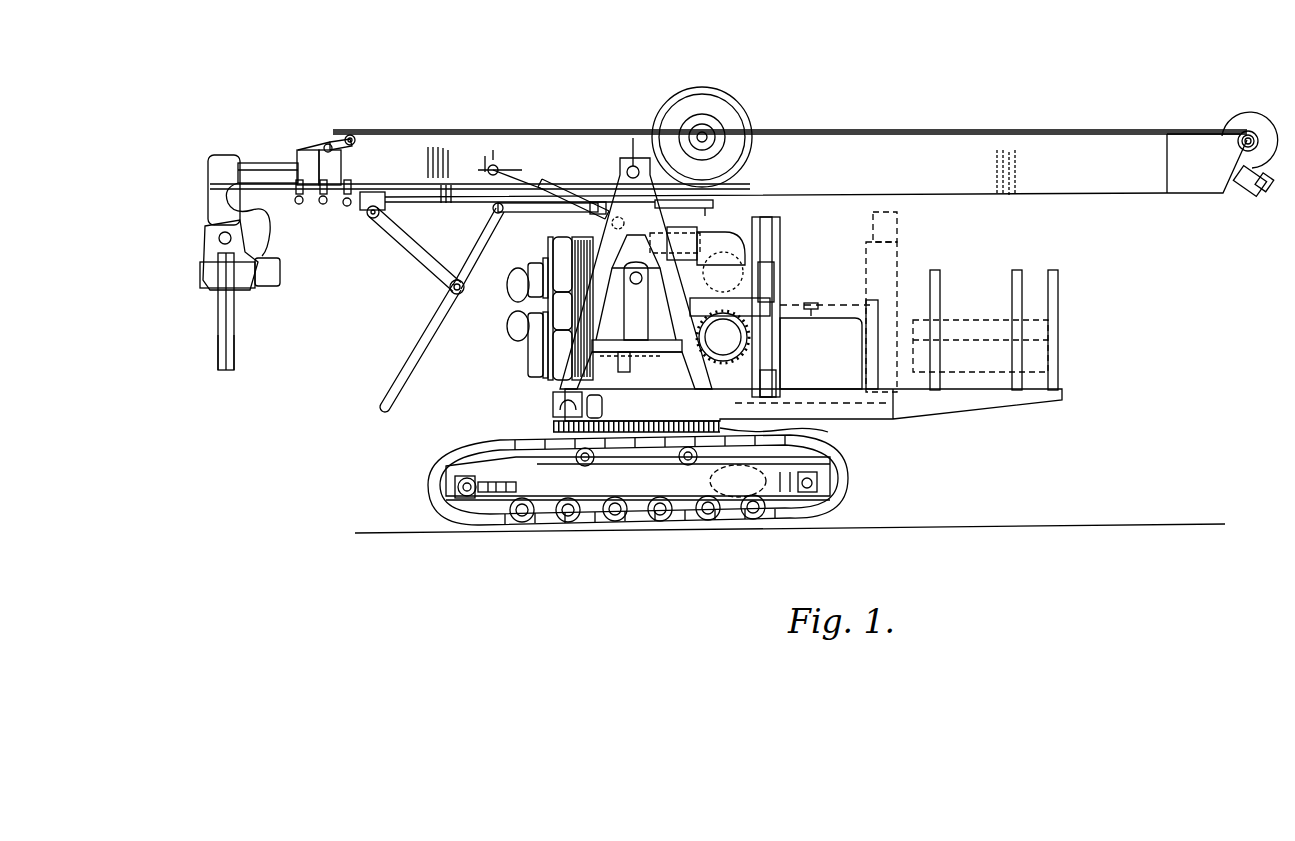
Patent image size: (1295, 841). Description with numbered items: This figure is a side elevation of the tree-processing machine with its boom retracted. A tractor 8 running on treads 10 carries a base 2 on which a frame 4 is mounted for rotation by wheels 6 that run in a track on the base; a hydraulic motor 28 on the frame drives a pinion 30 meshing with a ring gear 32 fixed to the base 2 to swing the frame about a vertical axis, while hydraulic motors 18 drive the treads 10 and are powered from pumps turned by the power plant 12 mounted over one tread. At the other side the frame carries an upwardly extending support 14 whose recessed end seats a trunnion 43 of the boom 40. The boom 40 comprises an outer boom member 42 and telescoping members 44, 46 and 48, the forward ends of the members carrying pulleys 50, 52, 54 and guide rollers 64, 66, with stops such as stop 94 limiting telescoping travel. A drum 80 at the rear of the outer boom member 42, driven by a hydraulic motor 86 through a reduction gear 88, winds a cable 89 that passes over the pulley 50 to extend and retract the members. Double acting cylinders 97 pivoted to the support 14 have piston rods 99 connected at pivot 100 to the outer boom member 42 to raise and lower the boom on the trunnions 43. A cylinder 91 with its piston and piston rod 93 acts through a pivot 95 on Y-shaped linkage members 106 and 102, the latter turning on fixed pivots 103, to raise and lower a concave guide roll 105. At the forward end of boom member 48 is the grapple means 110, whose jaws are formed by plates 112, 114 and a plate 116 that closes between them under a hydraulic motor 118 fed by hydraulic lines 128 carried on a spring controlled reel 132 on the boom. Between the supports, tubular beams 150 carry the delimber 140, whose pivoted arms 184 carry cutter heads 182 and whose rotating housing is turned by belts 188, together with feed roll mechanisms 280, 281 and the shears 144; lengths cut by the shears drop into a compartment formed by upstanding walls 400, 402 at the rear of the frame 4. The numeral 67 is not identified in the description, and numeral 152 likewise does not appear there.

The base 2 is at (550, 467).
The frame 4 is at (560, 396).
The wheels 6 is at (552, 406).
The tractor 8 is at (592, 490).
The treads 10 is at (428, 487).
The power plant 12 is at (837, 312).
The upwardly extending support 14 is at (636, 273).
The hydraulic motors 18 is at (710, 486).
The hydraulic motor 28 is at (587, 410).
The pinion 30 is at (551, 433).
The ring gear 32 is at (828, 432).
The boom 40 is at (1086, 211).
The outer boom member 42 is at (1058, 137).
The trunnions 43 is at (630, 165).
The boom member 44 is at (322, 156).
The boom member 46 is at (322, 170).
The boom member 48 is at (248, 160).
The pulley 50 is at (350, 134).
The pulley 52 is at (333, 138).
The pulley 54 is at (298, 148).
The roller 64 is at (323, 206).
The roller 66 is at (299, 205).
The shackle 67 is at (348, 208).
The drum 80 is at (1252, 115).
The hydraulic motor 86 is at (1268, 195).
The reduction gear 88 is at (1240, 192).
The cable 89 is at (894, 131).
The cylinder 91 is at (700, 192).
The piston and piston rod 93 is at (522, 212).
The stop 94 is at (297, 161).
The pivot 95 is at (482, 211).
The double acting cylinders 97 is at (575, 196).
The piston and piston rod 99 is at (540, 182).
The pivotal connection 100 is at (494, 163).
The linkage members 102 is at (412, 246).
The fixed pivots 103 is at (384, 212).
The concave guide roll 105 is at (458, 296).
The linkage members 106 is at (404, 370).
The grapple means 110 is at (217, 143).
The plate 112 is at (215, 340).
The plate 114 is at (236, 345).
The plate 116 is at (234, 324).
The hydraulic motor 118 is at (280, 284).
The hydraulic lines 128 is at (420, 150).
The spring controlled reel 132 is at (720, 88).
The delimber 140 is at (539, 252).
The shears 144 is at (788, 234).
The tubular beams 150 is at (730, 330).
The carriage 152 is at (636, 301).
The cutter heads 182 is at (510, 318).
The arm 184 is at (528, 273).
The belts 188 is at (592, 214).
The feed roll mechanism 280 is at (614, 360).
The feed roll mechanism 281 is at (734, 233).
The upstanding wall 400 is at (1010, 264).
The upstanding wall 402 is at (1060, 289).